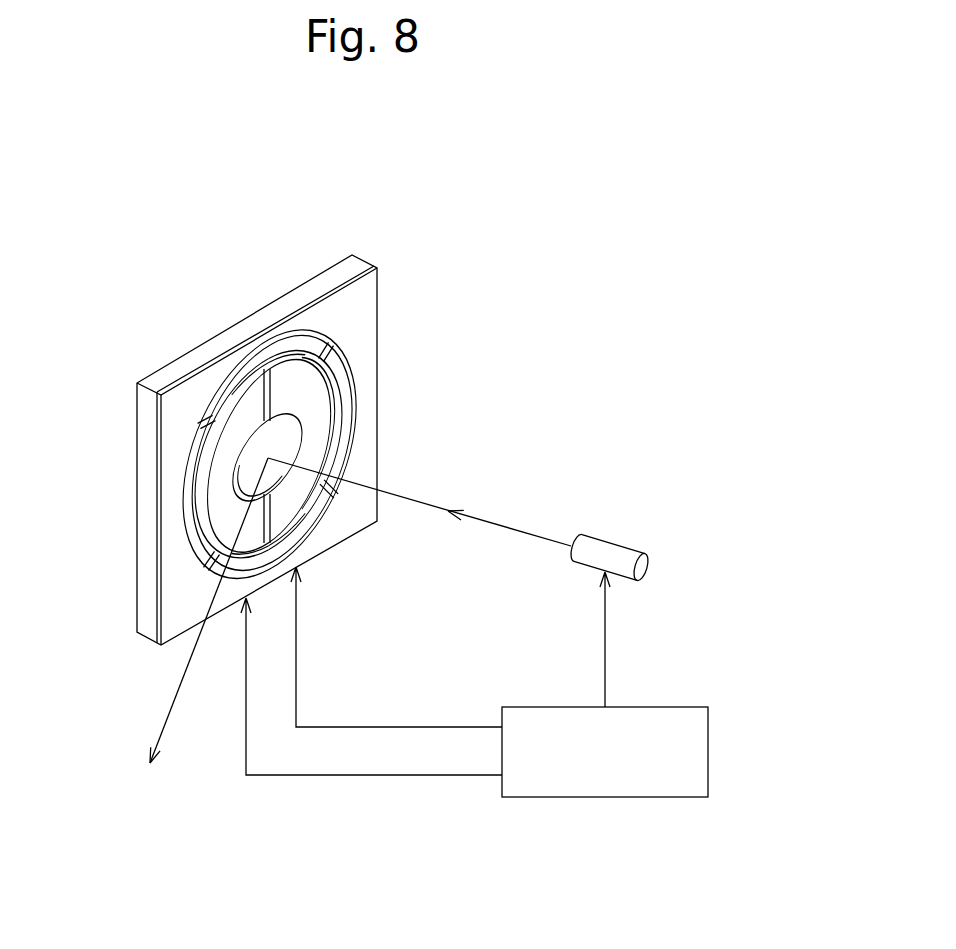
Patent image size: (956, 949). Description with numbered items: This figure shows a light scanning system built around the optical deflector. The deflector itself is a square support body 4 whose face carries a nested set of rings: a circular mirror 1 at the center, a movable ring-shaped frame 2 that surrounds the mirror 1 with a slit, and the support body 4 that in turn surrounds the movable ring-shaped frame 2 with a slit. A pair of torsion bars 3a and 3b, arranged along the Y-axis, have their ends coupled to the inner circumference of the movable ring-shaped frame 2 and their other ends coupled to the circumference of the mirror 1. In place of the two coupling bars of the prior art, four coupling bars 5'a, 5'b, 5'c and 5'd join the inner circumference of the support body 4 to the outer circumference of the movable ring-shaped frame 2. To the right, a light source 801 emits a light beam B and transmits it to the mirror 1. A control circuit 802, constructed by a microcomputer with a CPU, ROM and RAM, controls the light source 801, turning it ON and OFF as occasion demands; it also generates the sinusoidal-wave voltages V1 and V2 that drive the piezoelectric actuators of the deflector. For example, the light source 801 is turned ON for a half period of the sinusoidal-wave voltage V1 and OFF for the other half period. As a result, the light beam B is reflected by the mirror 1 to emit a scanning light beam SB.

The circular mirror 1 is at (288, 443).
The movable ring-shaped frame 2 is at (302, 507).
The torsion bar 3a is at (274, 393).
The torsion bar 3b is at (267, 545).
The support body 4 is at (180, 369).
The coupling bar 5'a is at (381, 368).
The coupling bar 5'b is at (366, 504).
The coupling bar 5'c is at (160, 522).
The coupling bar 5'd is at (221, 356).
The light source 801 is at (605, 538).
The control circuit 802 is at (708, 740).
The light beam B is at (442, 504).
The scanning light beam SB is at (163, 732).
The sinusoidal-wave voltage V1 is at (371, 708).
The sinusoidal-wave voltage V2 is at (396, 647).